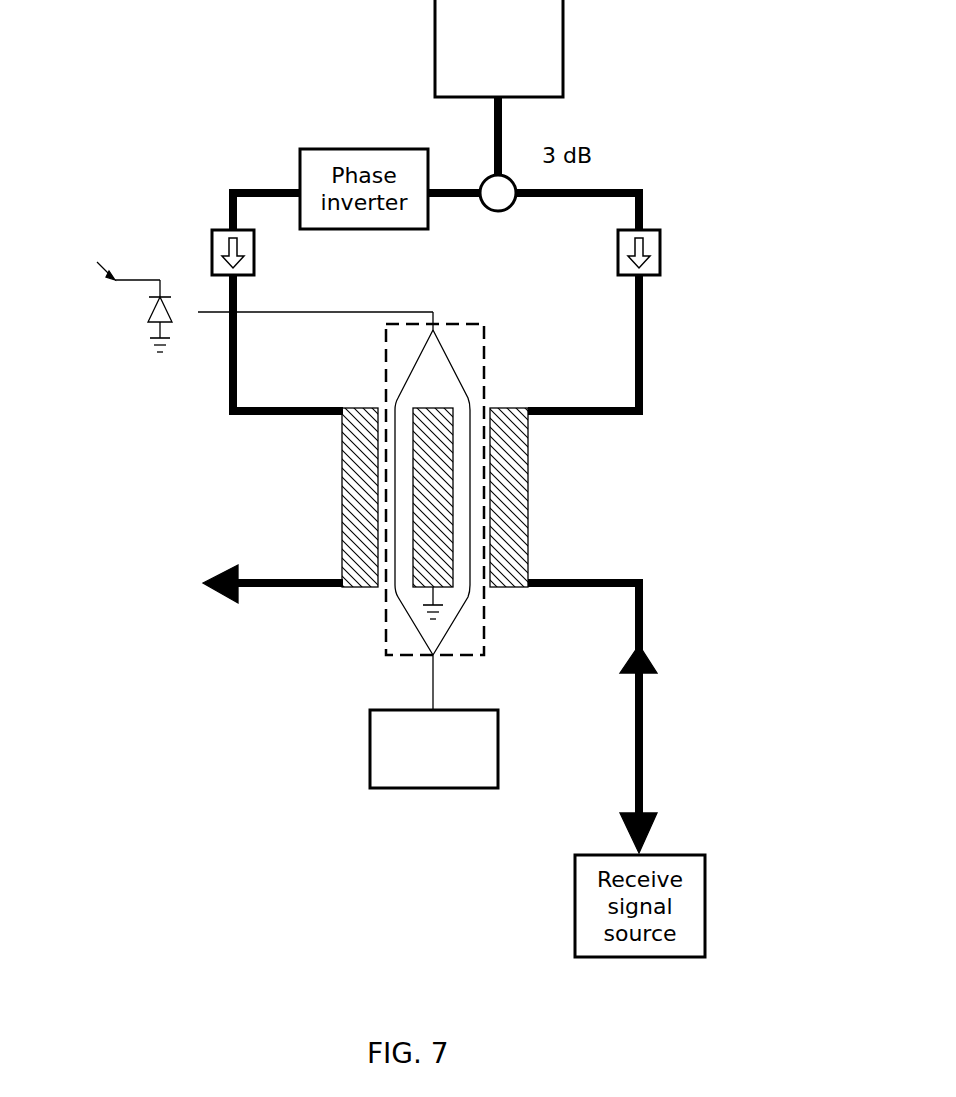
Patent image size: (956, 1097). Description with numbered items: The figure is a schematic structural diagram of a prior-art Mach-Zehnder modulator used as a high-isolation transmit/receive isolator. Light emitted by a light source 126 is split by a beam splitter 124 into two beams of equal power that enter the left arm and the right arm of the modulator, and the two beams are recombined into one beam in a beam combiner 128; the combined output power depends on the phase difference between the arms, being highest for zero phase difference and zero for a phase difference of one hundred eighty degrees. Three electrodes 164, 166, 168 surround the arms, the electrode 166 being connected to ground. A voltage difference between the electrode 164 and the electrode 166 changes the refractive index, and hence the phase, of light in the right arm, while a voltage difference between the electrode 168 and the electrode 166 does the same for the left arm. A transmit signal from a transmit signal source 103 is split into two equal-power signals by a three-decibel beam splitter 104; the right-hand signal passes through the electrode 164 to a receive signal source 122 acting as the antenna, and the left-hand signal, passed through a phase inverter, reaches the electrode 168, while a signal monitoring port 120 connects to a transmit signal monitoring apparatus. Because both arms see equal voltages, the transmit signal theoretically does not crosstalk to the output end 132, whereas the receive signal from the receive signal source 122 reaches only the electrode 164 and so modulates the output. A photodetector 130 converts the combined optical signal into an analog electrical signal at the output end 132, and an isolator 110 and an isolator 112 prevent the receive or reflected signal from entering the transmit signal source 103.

The transmit signal source 103 is at (565, 33).
The 3 dB beam splitter 104 is at (498, 212).
The isolator 110 is at (211, 255).
The isolator 112 is at (662, 252).
The signal monitoring port 120 is at (226, 568).
The receive signal source 122 is at (620, 823).
The beam splitter 124 is at (434, 648).
The light source 126 is at (369, 744).
The beam combiner 128 is at (417, 360).
The photodetector 130 is at (152, 318).
The output end 132 is at (102, 265).
The electrode 164 is at (530, 458).
The electrode 166 is at (436, 407).
The electrode 168 is at (341, 456).